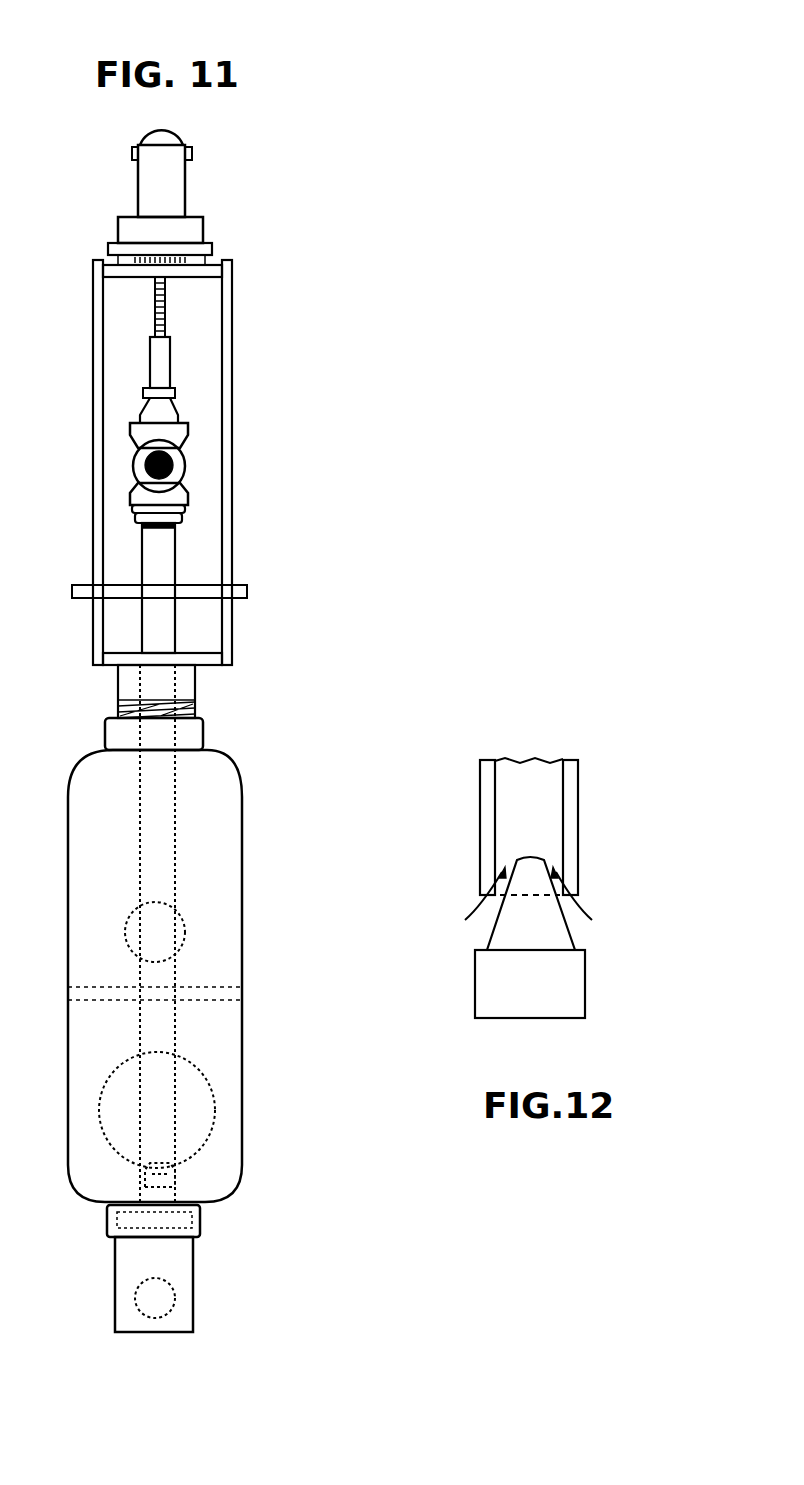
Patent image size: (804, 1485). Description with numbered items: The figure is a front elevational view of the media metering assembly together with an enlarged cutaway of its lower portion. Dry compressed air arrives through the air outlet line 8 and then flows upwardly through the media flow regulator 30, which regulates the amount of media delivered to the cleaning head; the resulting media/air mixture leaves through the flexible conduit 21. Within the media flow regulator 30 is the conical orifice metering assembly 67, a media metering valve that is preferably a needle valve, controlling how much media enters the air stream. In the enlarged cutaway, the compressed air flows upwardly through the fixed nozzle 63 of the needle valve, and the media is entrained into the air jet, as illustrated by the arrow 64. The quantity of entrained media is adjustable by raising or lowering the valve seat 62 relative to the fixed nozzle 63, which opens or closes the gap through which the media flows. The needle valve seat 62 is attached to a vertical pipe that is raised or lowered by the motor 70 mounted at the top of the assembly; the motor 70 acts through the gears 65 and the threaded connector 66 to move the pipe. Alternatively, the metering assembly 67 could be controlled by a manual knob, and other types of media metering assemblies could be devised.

In FIG. 11, the air outlet line 8 is at (150, 1295).
In FIG. 11, the flexible conduit 21 is at (170, 467).
In FIG. 11, the media flow regulator 30 is at (232, 241).
In FIG. 12, the valve seat 62 is at (573, 840).
In FIG. 11, the nozzle 63 is at (140, 1197).
In FIG. 12, the nozzle 63 is at (492, 987).
In FIG. 11, the arrow 64 is at (143, 845).
In FIG. 12, the arrow 64 is at (593, 916).
In FIG. 11, the gears 65 is at (110, 250).
In FIG. 11, the threaded connector 66 is at (165, 297).
In FIG. 11, the conical orifice metering assembly 67 is at (234, 1212).
In FIG. 12, the conical orifice metering assembly 67 is at (468, 790).
In FIG. 11, the motor 70 is at (158, 181).